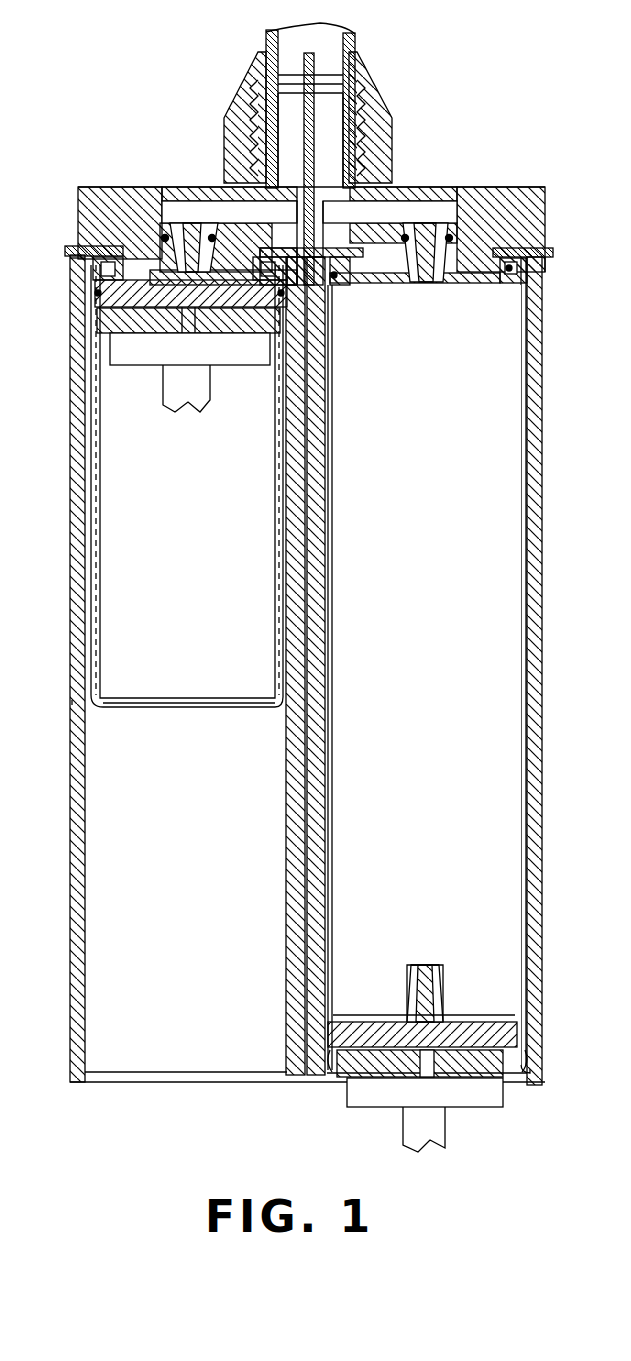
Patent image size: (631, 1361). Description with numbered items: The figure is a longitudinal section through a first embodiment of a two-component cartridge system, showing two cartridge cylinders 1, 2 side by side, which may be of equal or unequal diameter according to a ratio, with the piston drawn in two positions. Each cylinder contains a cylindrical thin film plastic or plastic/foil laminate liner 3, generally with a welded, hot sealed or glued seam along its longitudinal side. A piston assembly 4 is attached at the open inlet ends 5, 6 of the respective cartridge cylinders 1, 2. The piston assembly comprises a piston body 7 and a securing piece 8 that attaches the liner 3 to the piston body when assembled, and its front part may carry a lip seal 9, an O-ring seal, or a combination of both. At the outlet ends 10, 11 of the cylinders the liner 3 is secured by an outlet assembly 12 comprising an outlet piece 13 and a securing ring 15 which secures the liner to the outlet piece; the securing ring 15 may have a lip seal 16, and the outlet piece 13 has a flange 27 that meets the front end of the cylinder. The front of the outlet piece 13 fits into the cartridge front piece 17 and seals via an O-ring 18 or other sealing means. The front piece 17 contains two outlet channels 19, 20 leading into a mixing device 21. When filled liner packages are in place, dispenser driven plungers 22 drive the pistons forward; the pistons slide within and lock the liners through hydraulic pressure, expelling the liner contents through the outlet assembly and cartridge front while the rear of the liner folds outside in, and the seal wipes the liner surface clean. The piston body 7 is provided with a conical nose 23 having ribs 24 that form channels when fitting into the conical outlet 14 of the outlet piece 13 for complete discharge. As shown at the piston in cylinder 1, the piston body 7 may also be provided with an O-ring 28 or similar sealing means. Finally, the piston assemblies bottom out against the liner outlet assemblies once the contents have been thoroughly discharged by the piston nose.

The cartridge cylinder 1 is at (63, 661).
The cartridge cylinder 2 is at (549, 698).
The liner 3 is at (102, 610).
The piston assembly 4 is at (365, 1010).
The inlet end 5 is at (74, 1084).
The inlet end 6 is at (539, 1085).
The piston body 7 is at (470, 1032).
The securing piece 8 is at (481, 1082).
The lip seal 9 is at (536, 1027).
The outlet end 10 is at (73, 260).
The outlet end 11 is at (549, 262).
The outlet assembly 12 is at (365, 288).
The outlet piece 13 is at (545, 250).
The conical outlet 14 is at (410, 260).
The securing ring 15 is at (507, 285).
The lip seal 16 is at (522, 286).
The cartridge front piece 17 is at (527, 186).
The O-ring 18 is at (448, 200).
The outlet channel 19 is at (262, 150).
The outlet channel 20 is at (345, 148).
The mixing device 21 is at (352, 42).
The plunger 22 is at (396, 1122).
The conical nose 23 is at (420, 968).
The rib 24 is at (436, 980).
The flange 27 is at (78, 242).
The O-ring 28 is at (92, 313).